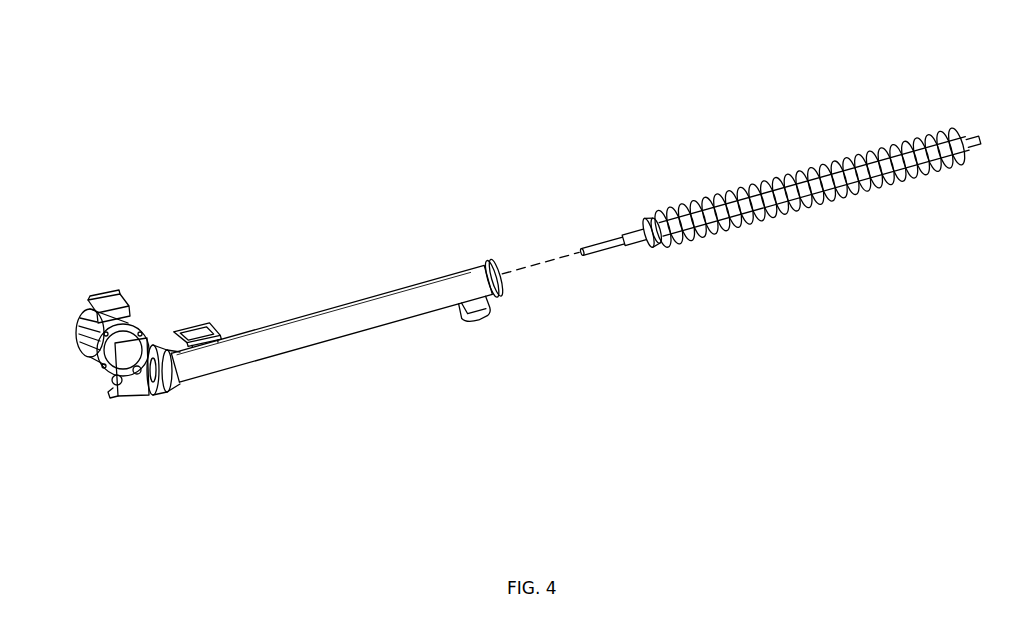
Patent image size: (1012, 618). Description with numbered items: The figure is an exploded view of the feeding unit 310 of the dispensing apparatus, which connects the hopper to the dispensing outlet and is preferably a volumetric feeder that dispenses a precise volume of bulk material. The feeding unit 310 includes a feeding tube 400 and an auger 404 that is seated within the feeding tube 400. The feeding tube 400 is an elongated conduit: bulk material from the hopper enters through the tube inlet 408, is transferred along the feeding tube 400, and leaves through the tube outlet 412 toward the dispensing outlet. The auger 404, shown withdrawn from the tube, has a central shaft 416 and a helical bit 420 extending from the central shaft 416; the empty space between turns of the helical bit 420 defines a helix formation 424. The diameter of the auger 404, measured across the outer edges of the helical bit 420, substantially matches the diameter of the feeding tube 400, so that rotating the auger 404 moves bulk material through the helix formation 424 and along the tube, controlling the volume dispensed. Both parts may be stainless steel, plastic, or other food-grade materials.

The feeding unit 310 is at (322, 90).
The feeding tube 400 is at (322, 307).
The auger 404 is at (701, 192).
The tube inlet 408 is at (203, 324).
The tube outlet 412 is at (478, 322).
The central shaft 416 is at (632, 228).
The helical bit 420 is at (802, 180).
The helix formation 424 is at (881, 162).